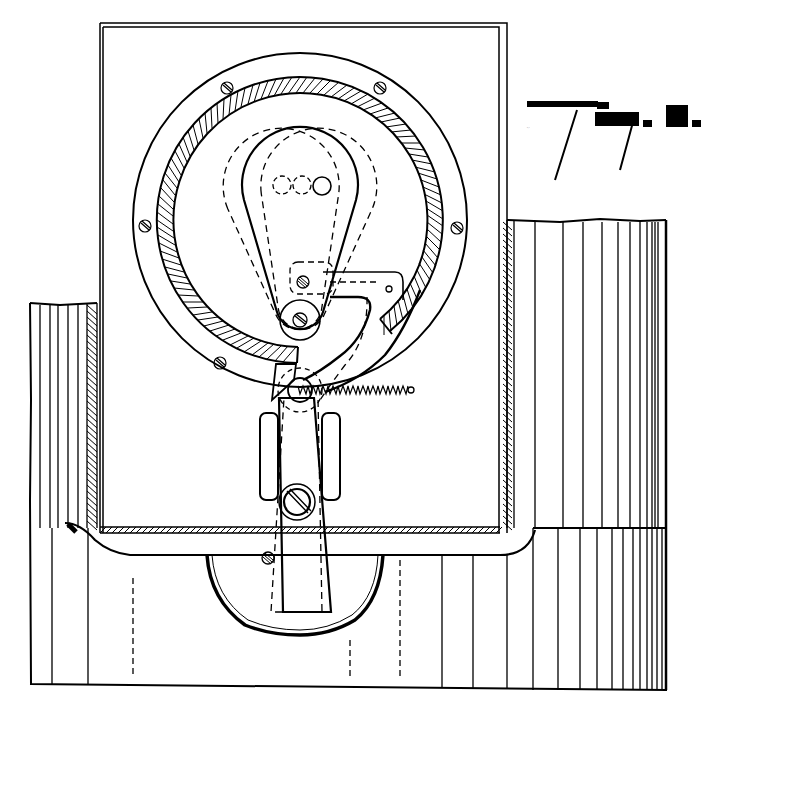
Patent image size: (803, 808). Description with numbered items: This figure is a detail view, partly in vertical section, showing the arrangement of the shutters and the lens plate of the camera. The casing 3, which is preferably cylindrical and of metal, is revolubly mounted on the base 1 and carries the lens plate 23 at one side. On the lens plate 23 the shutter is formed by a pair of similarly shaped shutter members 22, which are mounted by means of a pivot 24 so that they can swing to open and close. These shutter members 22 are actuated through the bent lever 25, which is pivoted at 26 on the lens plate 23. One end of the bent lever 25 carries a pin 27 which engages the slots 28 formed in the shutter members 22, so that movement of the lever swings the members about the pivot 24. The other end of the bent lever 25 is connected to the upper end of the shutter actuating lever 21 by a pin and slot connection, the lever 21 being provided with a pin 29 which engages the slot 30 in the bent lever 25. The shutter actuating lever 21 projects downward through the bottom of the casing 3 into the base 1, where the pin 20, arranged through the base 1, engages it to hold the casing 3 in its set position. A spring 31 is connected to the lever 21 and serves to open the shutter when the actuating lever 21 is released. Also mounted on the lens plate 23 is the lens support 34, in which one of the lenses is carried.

The base 1 is at (410, 683).
The casing 3 is at (633, 372).
The pin 20 is at (262, 558).
The shutter actuating lever 21 is at (300, 600).
The shutter members 22 is at (344, 196).
The lens plate 23 is at (499, 174).
The pivot 24 is at (295, 322).
The bent lever 25 is at (372, 355).
The pivot of bent lever 26 is at (391, 287).
The pin 27 is at (290, 272).
The slots 28 is at (307, 284).
The pin 29 is at (314, 395).
The slot 30 is at (295, 368).
The spring 31 is at (383, 399).
The lens support 34 is at (415, 137).